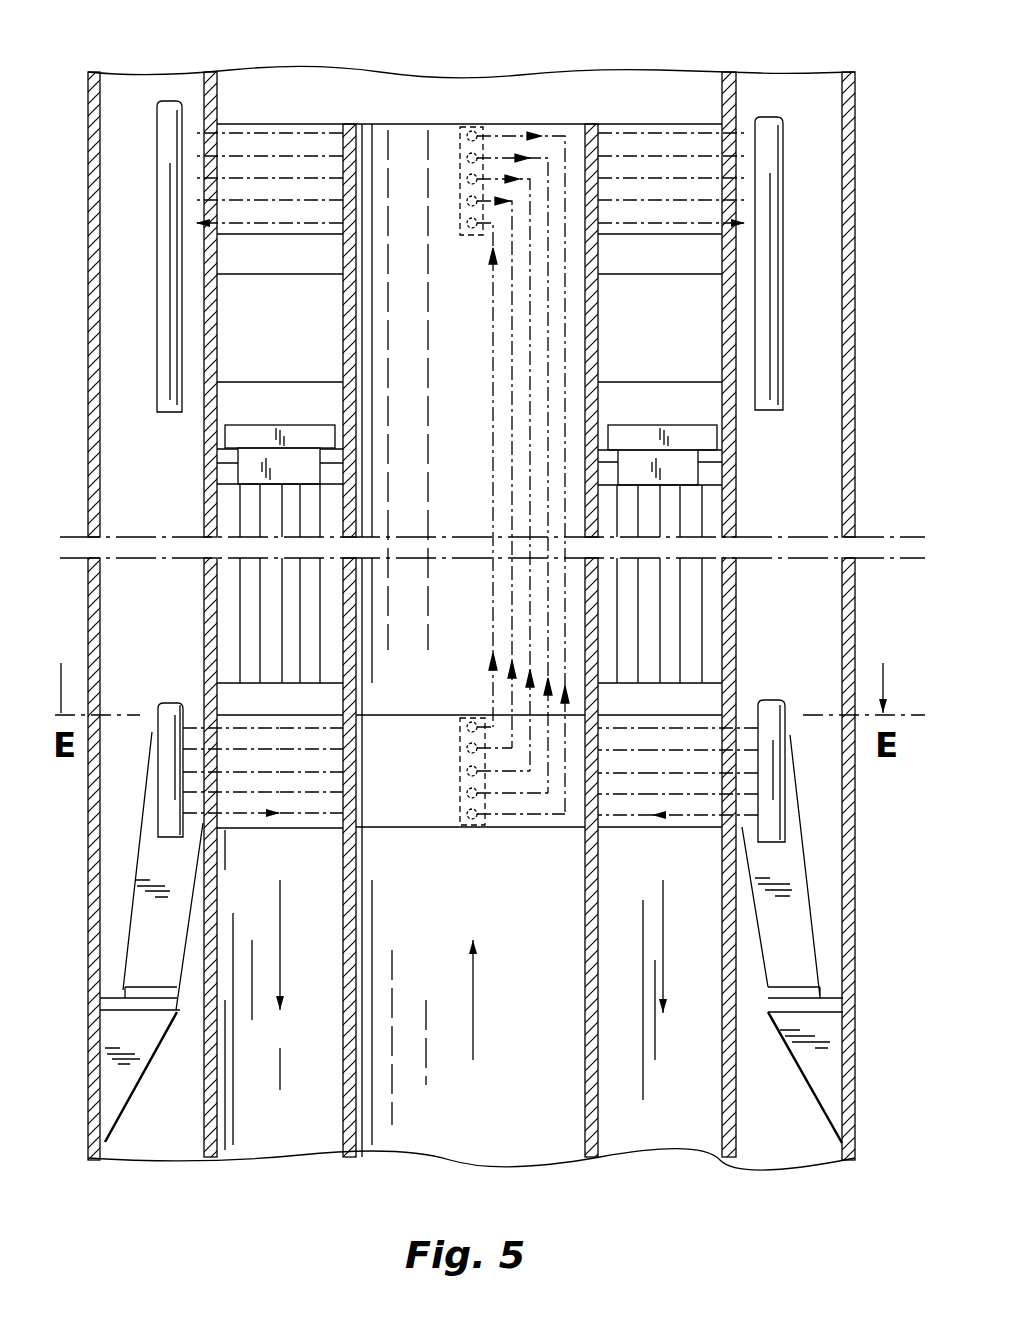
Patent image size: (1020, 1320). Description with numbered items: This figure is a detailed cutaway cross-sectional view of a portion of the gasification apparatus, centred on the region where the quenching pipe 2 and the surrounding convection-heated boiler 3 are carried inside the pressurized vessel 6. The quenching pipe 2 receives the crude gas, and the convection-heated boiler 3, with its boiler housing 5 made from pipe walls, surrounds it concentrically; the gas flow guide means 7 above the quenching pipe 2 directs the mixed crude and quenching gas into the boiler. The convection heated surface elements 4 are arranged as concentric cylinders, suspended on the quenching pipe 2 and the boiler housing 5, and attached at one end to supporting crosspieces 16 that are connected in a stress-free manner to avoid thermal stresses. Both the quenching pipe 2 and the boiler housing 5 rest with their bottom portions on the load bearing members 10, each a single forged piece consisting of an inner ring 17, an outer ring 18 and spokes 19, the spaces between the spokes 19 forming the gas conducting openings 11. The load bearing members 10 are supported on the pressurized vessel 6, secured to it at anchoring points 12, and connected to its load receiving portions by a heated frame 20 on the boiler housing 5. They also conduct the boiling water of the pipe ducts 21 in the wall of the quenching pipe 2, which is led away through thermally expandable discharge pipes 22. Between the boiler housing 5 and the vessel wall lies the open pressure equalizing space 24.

The quenching pipe 2 is at (537, 1140).
The convection-heated boiler 3 is at (705, 700).
The convection heated surface elements 4 is at (700, 609).
The boiler housing 5 is at (738, 515).
The pressurized vessel 6 is at (848, 465).
The gas flow guide means 7 is at (672, 83).
The load bearing members 10 is at (318, 836).
The gas conducting openings 11 is at (255, 822).
The anchoring points 12 is at (147, 1042).
The supporting crosspieces 16 is at (298, 433).
The inner ring 17 is at (357, 778).
The outer ring 18 is at (205, 720).
The spokes 19 is at (463, 800).
The heated frame 20 is at (147, 915).
The pipe ducts 21 is at (310, 727).
The discharge pipes 22 is at (283, 157).
The pressure equalizing space 24 is at (828, 865).